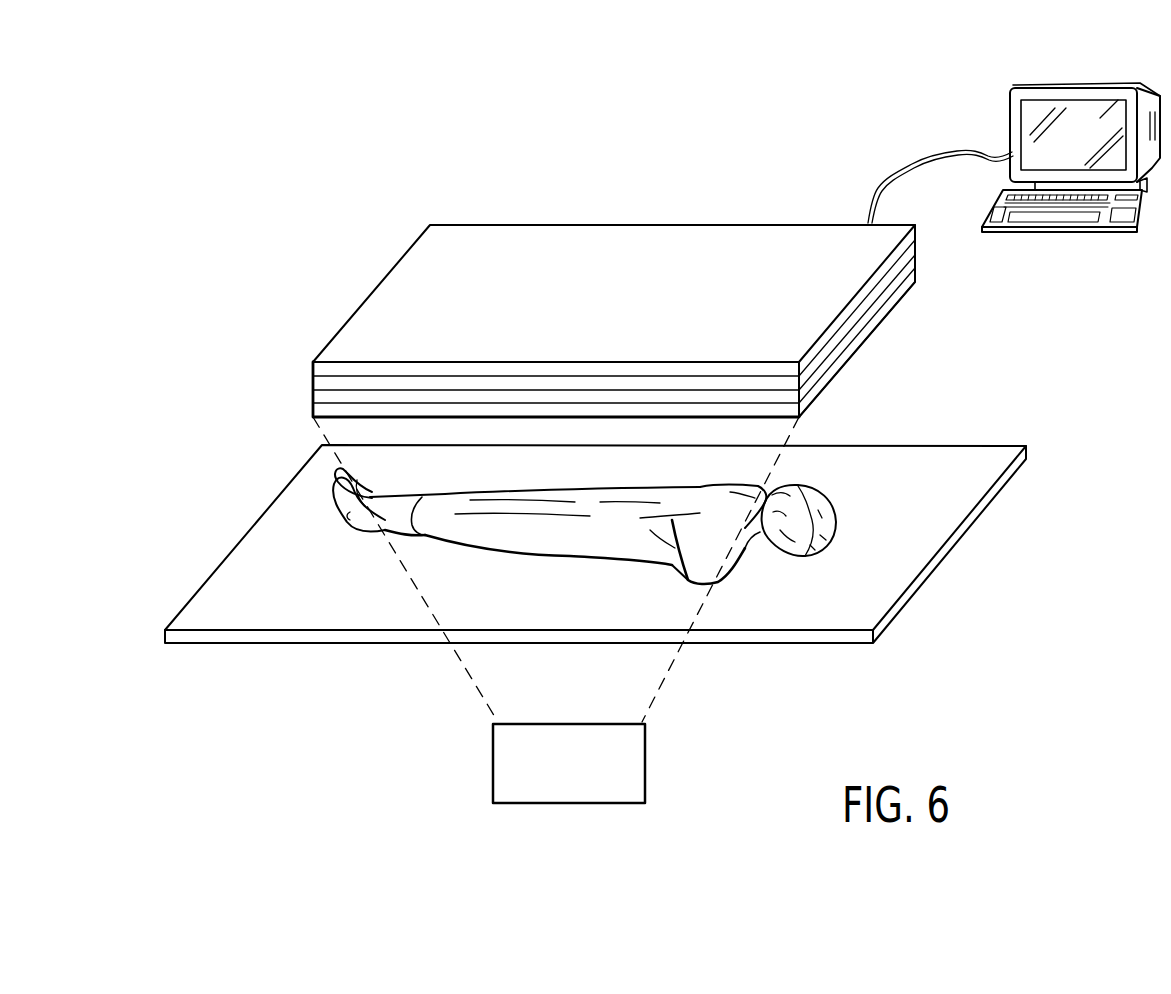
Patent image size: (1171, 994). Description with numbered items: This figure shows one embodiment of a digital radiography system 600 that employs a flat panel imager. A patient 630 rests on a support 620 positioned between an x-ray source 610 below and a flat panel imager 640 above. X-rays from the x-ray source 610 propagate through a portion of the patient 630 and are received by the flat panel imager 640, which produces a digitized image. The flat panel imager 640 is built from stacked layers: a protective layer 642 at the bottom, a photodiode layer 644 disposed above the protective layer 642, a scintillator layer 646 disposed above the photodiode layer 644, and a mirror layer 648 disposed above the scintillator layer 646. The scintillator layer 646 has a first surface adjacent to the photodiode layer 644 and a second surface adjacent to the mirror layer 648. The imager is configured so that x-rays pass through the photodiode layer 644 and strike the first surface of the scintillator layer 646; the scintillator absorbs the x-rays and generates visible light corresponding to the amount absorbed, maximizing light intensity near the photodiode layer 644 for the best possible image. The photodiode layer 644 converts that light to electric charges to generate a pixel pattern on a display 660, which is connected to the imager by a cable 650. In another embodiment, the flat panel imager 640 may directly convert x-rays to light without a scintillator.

The digital radiography system 600 is at (355, 124).
The x-ray source 610 is at (493, 765).
The support 620 is at (907, 530).
The patient 630 is at (830, 490).
The flat panel imager 640 is at (410, 290).
The protective layer 642 is at (313, 410).
The photodiode layer 644 is at (313, 396).
The scintillator layer 646 is at (313, 383).
The mirror layer 648 is at (313, 368).
The cable 650 is at (913, 164).
The display 660 is at (1080, 85).